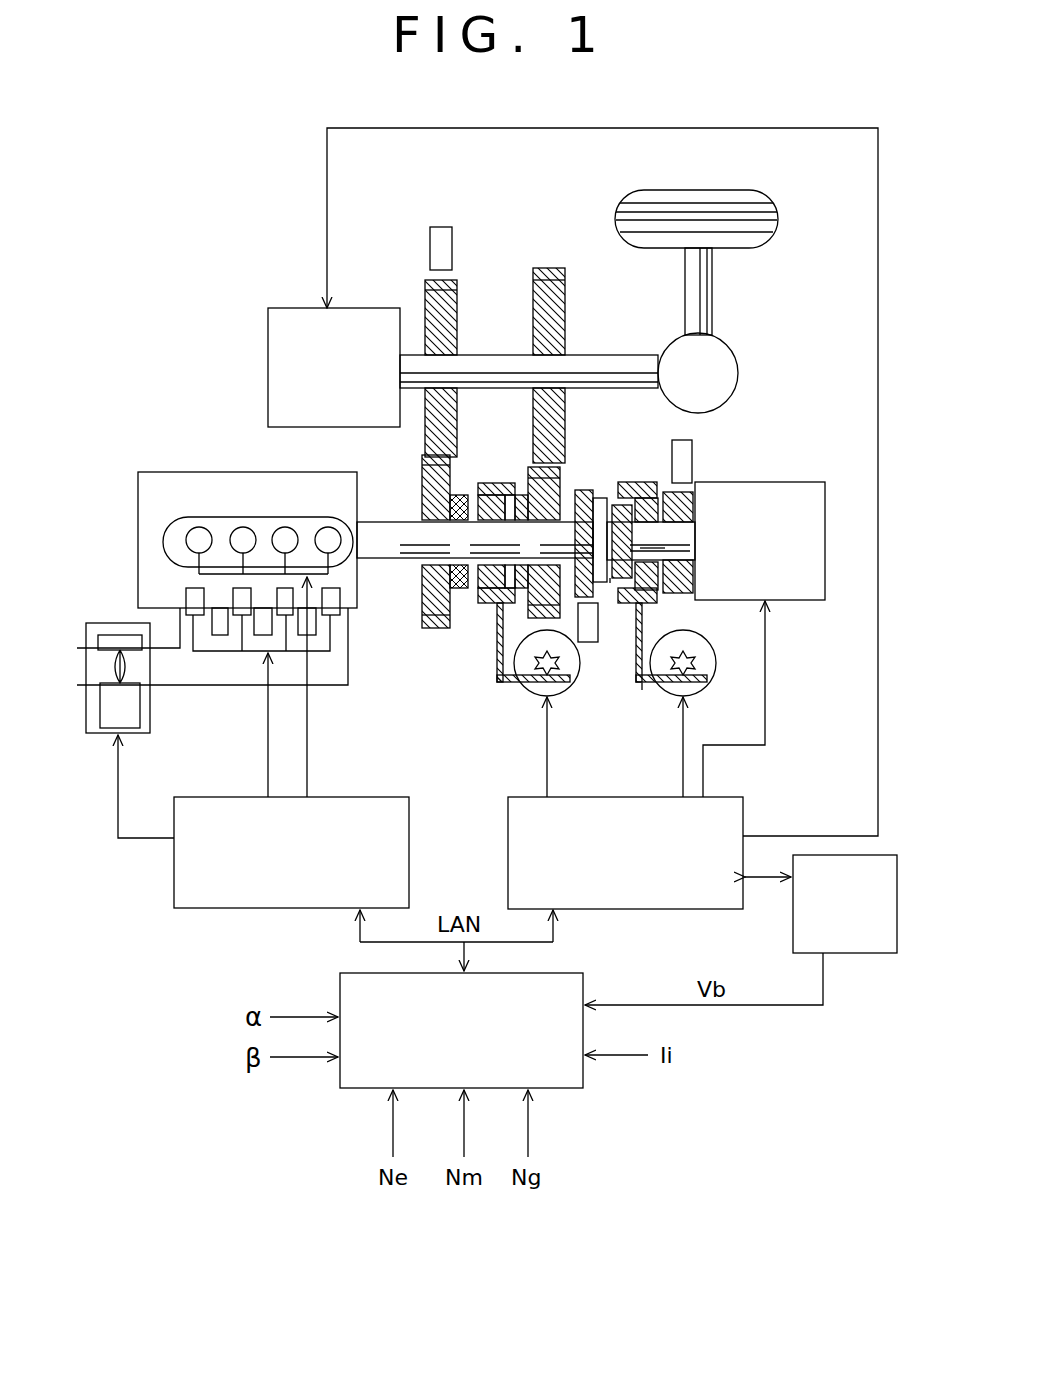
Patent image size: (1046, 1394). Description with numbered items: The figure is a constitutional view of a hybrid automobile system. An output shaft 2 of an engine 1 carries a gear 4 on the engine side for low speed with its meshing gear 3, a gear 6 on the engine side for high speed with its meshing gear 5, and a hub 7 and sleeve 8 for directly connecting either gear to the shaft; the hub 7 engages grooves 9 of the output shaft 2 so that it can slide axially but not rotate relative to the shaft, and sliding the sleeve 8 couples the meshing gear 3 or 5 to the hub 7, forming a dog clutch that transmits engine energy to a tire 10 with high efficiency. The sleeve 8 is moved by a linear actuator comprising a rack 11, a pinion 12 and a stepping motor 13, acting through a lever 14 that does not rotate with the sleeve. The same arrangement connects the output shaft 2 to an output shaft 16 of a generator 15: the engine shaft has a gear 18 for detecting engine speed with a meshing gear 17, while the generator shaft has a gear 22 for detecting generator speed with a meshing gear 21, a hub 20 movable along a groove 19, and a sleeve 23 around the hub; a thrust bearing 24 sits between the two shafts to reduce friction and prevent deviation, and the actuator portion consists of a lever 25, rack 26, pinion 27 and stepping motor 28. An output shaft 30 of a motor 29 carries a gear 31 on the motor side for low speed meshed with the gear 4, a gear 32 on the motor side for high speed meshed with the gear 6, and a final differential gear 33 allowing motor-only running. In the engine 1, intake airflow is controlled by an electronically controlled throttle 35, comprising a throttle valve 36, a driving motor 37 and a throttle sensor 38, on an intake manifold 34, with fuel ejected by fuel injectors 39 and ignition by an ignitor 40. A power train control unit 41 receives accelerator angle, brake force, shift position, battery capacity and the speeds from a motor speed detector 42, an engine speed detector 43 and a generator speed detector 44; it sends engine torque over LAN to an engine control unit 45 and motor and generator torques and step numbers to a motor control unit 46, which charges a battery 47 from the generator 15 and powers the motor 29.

The engine 1 is at (157, 480).
The output shaft 2 is at (372, 522).
The meshing gear 3 is at (460, 590).
The gear on the engine side for low speed 4 is at (422, 612).
The meshing gear 5 is at (522, 495).
The gear on the engine side for high speed 6 is at (557, 492).
The hub 7 is at (480, 495).
The sleeve 8 is at (497, 483).
The grooves 9 is at (450, 540).
The tire 10 is at (722, 200).
The rack 11 is at (500, 690).
The pinion 12 is at (565, 690).
The stepping motor (1) 13 is at (540, 697).
The lever 14 is at (497, 650).
The generator 15 is at (790, 482).
The output shaft 16 is at (683, 530).
The meshing gear 17 is at (600, 498).
The gear for detecting the engine speed 18 is at (582, 490).
The groove 19 is at (665, 550).
The hub 20 is at (660, 595).
The meshing gear 21 is at (685, 580).
The gear for detecting the speed of the generator 22 is at (690, 575).
The sleeve 23 is at (620, 505).
The thrust bearing 24 is at (590, 642).
The lever 25 is at (640, 645).
The rack 26 is at (642, 683).
The pinion 27 is at (695, 663).
The stepping motor (2) 28 is at (695, 693).
The motor 29 is at (268, 385).
The output shaft 30 is at (625, 355).
The gear on the motor side for low speed 31 is at (457, 300).
The gear on the motor side for high speed 32 is at (550, 268).
The final differential gear 33 is at (738, 375).
The intake manifold 34 is at (240, 685).
The electronically controlled throttle 35 is at (95, 630).
The throttle valve 36 is at (128, 670).
The driving motor 37 is at (138, 725).
The throttle sensor 38 is at (120, 640).
The fuel injectors 39 is at (193, 598).
The ignitor 40 is at (199, 527).
The power train control unit 41 is at (572, 1088).
The motor speed detector 42 is at (452, 245).
The engine speed detector 43 is at (612, 583).
The generator speed detector 44 is at (692, 460).
The engine control unit 45 is at (238, 908).
The motor control unit 46 is at (700, 908).
The battery 47 is at (878, 953).